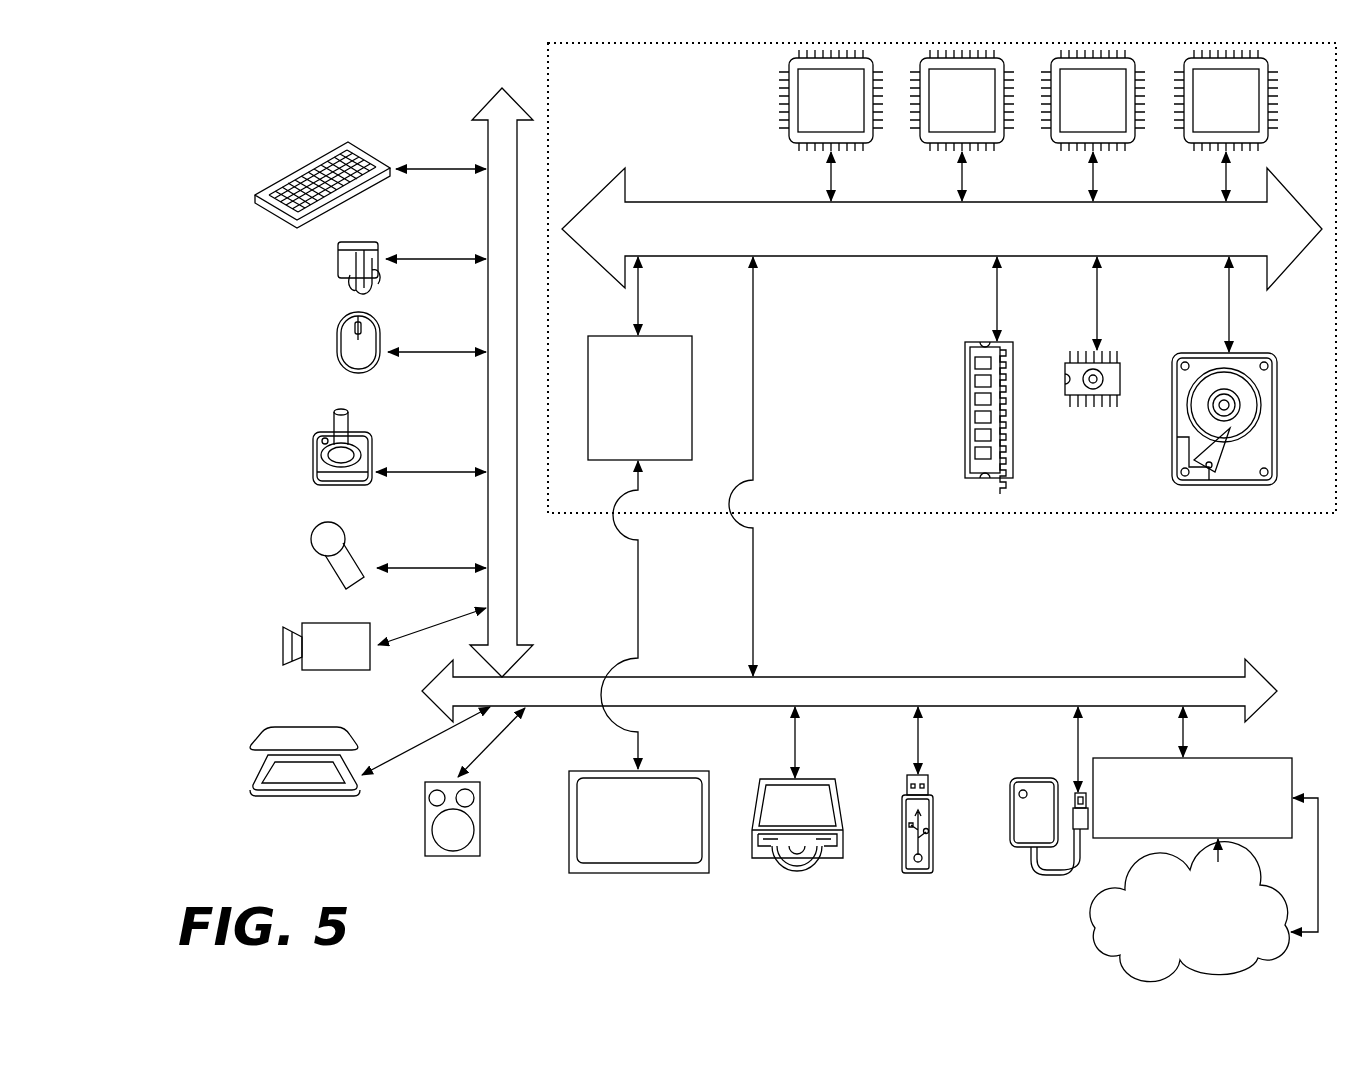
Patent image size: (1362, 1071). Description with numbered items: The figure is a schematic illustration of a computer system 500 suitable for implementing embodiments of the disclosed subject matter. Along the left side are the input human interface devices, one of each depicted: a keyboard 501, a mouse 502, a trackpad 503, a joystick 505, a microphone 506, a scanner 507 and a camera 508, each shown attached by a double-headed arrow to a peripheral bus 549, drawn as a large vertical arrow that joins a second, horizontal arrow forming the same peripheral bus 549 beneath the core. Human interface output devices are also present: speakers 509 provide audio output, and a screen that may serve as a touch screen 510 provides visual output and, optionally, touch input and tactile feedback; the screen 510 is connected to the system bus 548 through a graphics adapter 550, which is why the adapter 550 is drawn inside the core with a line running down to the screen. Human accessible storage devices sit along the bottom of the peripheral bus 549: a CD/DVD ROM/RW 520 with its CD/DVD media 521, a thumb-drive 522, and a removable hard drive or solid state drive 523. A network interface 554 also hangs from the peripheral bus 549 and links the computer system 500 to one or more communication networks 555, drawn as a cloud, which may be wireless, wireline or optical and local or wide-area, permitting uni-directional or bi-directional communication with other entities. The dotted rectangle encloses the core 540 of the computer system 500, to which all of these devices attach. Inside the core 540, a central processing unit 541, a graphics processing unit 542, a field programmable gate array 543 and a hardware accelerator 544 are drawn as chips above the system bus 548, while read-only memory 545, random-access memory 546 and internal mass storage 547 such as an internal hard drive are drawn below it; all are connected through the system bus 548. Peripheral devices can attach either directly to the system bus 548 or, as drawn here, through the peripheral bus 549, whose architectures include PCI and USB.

The computer system 500 is at (250, 106).
The keyboard 501 is at (256, 200).
The mouse 502 is at (337, 343).
The trackpad 503 is at (338, 262).
The joystick 505 is at (313, 470).
The microphone 506 is at (313, 540).
The scanner 507 is at (255, 784).
The camera 508 is at (284, 648).
The speakers 509 is at (452, 857).
The touch screen 510 is at (638, 874).
The CD/DVD ROM/RW 520 is at (840, 858).
The CD/DVD media 521 is at (780, 870).
The thumb-drive 522 is at (923, 874).
The removable hard drive or solid state drive 523 is at (1020, 848).
The core 540 is at (933, 514).
The central processing unit 541 is at (831, 100).
The graphics processing unit 542 is at (962, 100).
The field programmable gate array 543 is at (1093, 100).
The hardware accelerator 544 is at (1226, 100).
The read-only memory 545 is at (1088, 412).
The random-access memory 546 is at (964, 438).
The internal mass storage 547 is at (1182, 352).
The system bus 548 is at (942, 229).
The peripheral bus 549 is at (487, 130).
The graphics adapter 550 is at (640, 398).
The network interface 554 is at (1192, 798).
The communication networks 555 is at (1094, 937).